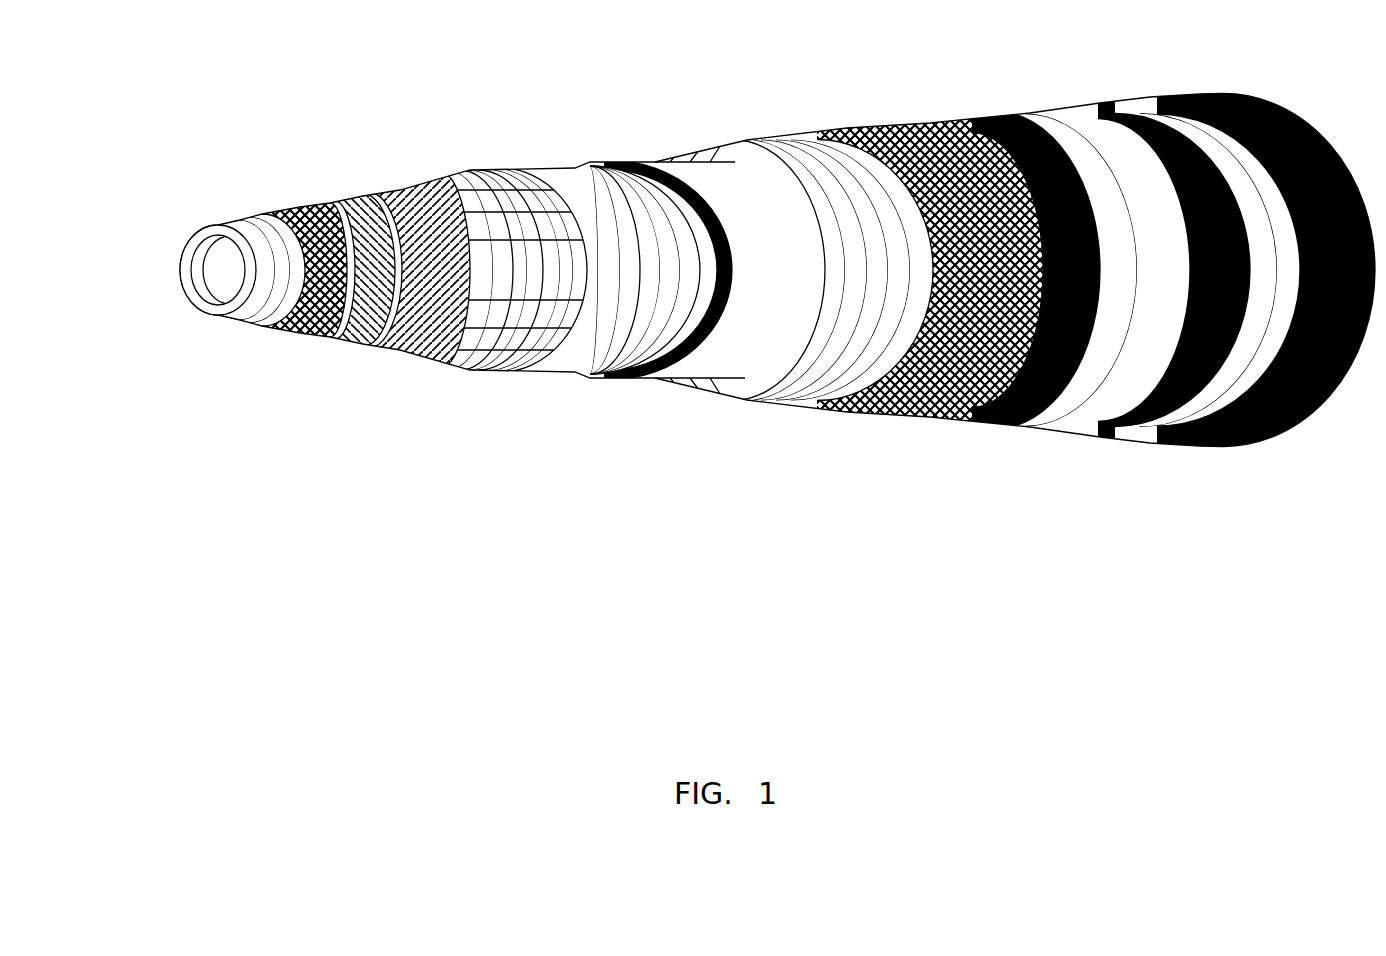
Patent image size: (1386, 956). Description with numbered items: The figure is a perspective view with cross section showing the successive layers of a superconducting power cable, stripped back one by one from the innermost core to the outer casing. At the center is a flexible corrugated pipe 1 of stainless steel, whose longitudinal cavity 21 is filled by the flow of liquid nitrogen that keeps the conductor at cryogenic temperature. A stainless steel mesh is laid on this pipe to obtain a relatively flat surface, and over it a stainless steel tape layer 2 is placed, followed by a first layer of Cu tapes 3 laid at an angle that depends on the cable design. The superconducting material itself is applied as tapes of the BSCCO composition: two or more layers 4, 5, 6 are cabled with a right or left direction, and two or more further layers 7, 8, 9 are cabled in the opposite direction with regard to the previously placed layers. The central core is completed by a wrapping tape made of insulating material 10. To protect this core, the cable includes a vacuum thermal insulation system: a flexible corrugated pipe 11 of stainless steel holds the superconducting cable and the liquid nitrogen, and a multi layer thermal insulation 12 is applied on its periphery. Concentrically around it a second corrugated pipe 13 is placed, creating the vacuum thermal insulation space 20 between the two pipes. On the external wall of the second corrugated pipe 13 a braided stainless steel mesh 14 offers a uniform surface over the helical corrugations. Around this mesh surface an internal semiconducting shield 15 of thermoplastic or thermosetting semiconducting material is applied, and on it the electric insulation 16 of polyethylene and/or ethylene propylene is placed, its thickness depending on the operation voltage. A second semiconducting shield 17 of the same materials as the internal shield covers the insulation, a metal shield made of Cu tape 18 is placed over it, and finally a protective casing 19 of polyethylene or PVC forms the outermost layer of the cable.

The flexible corrugated pipe 1 is at (213, 222).
The stainless steel tape layer 2 is at (262, 208).
The first layer of Cu tapes 3 is at (348, 323).
The superconducting tape layer 4 is at (347, 197).
The superconducting tape layer 5 is at (428, 338).
The superconducting tape layer 6 is at (440, 187).
The superconducting tape layer 7 is at (500, 330).
The superconducting tape layer 8 is at (513, 192).
The superconducting tape layer 9 is at (565, 322).
The wrapping tape made of insulating material 10 is at (587, 187).
The flexible corrugated pipe 11 is at (667, 322).
The multi layer thermal insulation 12 is at (735, 177).
The second corrugated pipe 13 is at (845, 328).
The braided stainless steel mesh 14 is at (893, 127).
The internal semiconducting shield 15 is at (1067, 357).
The electric insulation 16 is at (1067, 127).
The second semiconducting shield 17 is at (1210, 362).
The metal shield made of Cu tape 18 is at (1185, 130).
The protective casing 19 is at (1330, 373).
The vacuum thermal insulation space 20 is at (757, 142).
The longitudinal cavity 21 is at (222, 268).